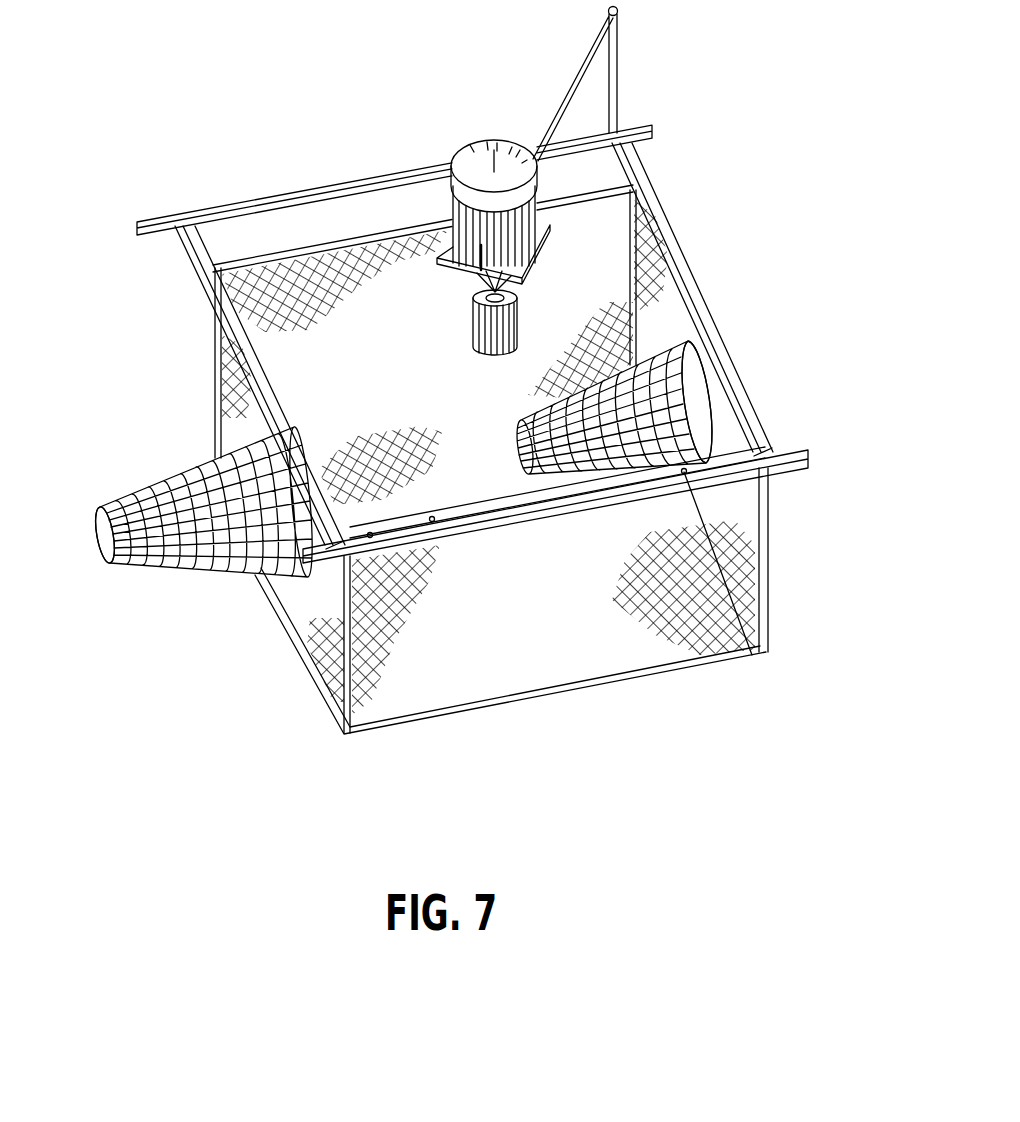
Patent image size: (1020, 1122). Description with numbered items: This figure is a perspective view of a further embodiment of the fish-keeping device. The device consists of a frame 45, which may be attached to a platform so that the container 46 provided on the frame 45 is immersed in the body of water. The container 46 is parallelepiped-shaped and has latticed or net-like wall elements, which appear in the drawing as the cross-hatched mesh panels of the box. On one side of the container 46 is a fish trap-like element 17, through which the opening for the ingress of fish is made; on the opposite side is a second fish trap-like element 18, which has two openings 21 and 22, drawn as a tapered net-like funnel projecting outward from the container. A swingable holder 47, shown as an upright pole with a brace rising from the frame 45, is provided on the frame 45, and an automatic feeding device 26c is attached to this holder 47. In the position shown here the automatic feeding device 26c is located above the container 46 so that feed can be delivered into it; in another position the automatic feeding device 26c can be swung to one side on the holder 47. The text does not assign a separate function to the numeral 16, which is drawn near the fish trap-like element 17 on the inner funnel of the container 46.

The entrance funnel 16 is at (712, 405).
The fish trap-like element 17 is at (668, 347).
The fish trap-like element 18 is at (144, 487).
The opening 21 is at (398, 470).
The opening 22 is at (103, 535).
The automatic feeding device 26c is at (477, 163).
The frame 45 is at (767, 433).
The container 46 is at (686, 607).
The swingable holder 47 is at (590, 76).